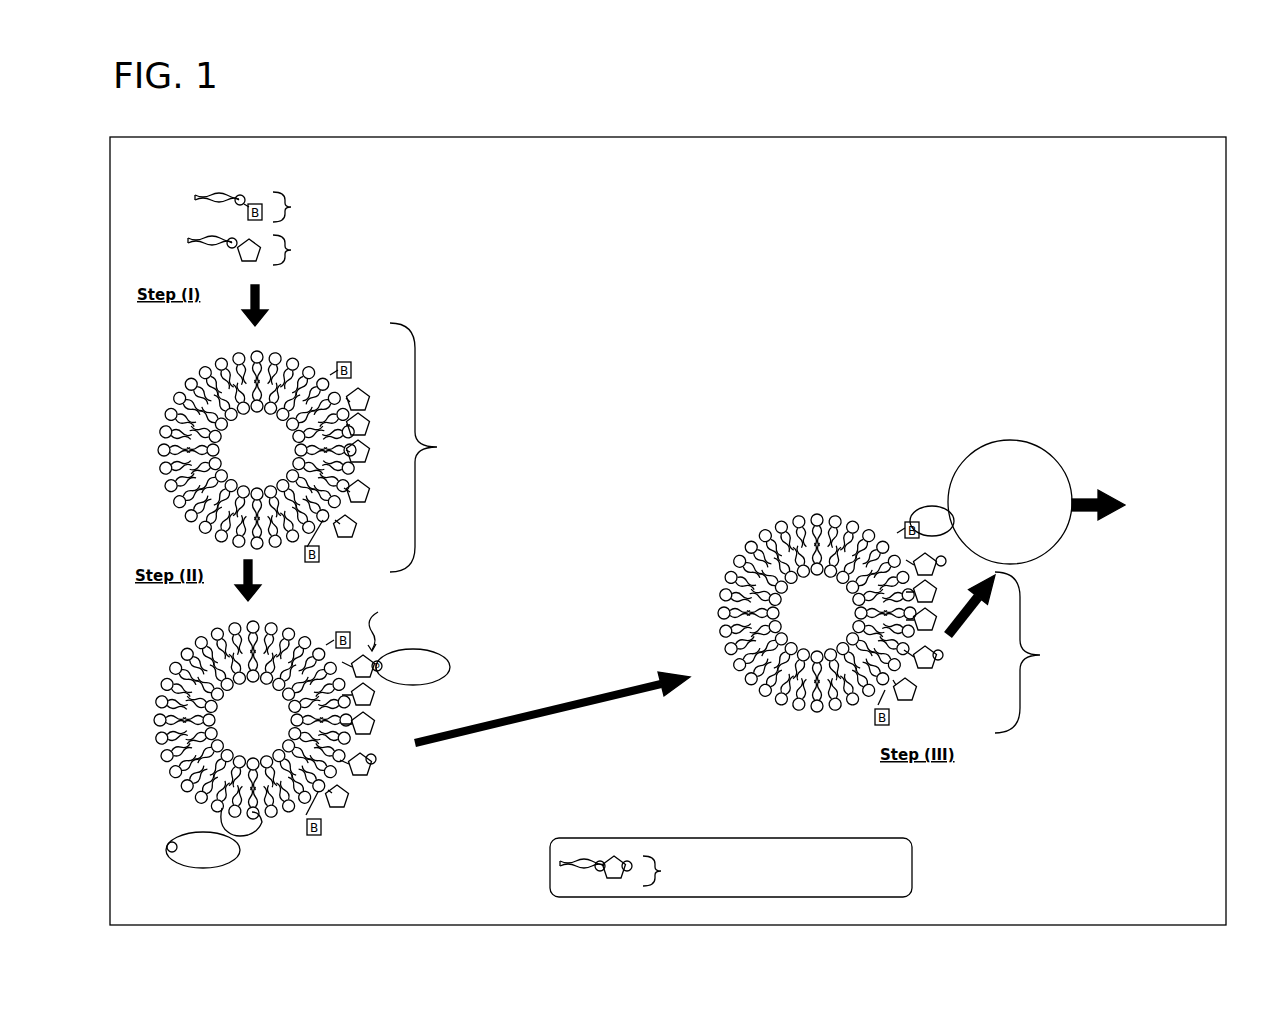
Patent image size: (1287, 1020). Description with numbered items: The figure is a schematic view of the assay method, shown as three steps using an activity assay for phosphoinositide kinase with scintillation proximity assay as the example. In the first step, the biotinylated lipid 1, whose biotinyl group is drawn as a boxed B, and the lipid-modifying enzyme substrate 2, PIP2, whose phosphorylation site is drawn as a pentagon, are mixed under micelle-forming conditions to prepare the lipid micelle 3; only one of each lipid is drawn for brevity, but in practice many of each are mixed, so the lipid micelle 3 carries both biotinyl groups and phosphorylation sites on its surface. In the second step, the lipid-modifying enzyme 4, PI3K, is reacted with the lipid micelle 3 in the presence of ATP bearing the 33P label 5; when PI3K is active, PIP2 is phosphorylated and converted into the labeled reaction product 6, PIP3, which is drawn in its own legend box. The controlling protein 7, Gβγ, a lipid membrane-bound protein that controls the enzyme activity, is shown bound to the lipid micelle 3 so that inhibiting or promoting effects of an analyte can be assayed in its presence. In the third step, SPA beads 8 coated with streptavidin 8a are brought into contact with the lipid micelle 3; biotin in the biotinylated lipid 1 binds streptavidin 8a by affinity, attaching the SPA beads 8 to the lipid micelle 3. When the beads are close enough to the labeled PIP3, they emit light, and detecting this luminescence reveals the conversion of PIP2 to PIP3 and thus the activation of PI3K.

The biotinylated lipid 1 is at (344, 207).
The lipid-modifying enzyme substrate (PIP2) 2 is at (433, 250).
The lipid micelle 3 is at (671, 528).
The lipid-modifying enzyme (PI3K) 4 is at (428, 652).
The 33P label 5 is at (376, 760).
The reaction product (PIP3) 6 is at (731, 867).
The controlling protein (Gβγ) 7 is at (255, 838).
The SPA beads 8 is at (1020, 450).
The streptavidin 8a is at (917, 508).